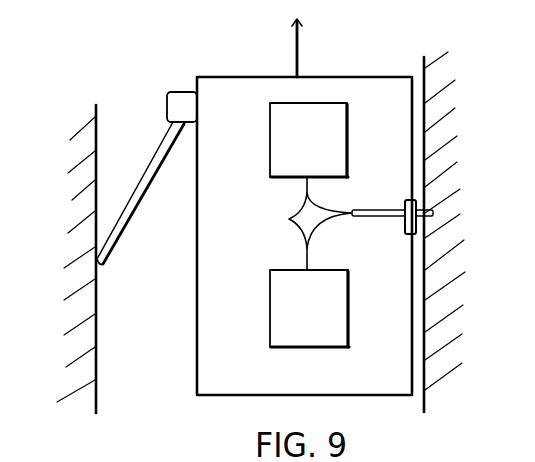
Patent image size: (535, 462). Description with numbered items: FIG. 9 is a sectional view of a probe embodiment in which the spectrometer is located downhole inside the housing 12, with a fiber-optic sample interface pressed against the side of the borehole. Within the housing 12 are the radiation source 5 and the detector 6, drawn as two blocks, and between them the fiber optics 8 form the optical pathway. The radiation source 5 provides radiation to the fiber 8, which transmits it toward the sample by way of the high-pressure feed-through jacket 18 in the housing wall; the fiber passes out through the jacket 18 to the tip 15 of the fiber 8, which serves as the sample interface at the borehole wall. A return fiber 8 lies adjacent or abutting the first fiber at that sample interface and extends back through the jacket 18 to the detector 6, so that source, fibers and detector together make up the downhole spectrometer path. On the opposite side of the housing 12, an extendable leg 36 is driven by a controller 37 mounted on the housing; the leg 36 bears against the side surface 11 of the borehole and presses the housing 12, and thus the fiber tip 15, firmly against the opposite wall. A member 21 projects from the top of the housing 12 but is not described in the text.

The first electronic unit 5 is at (315, 149).
The second electronic unit 6 is at (315, 317).
The junction 8 is at (289, 219).
The wall 11 is at (95, 369).
The housing 12 is at (178, 354).
The connector 15 is at (433, 213).
The mounting wall 18 is at (426, 196).
The antenna 21 is at (301, 47).
The support arm 36 is at (137, 207).
The hinge mount 37 is at (181, 92).